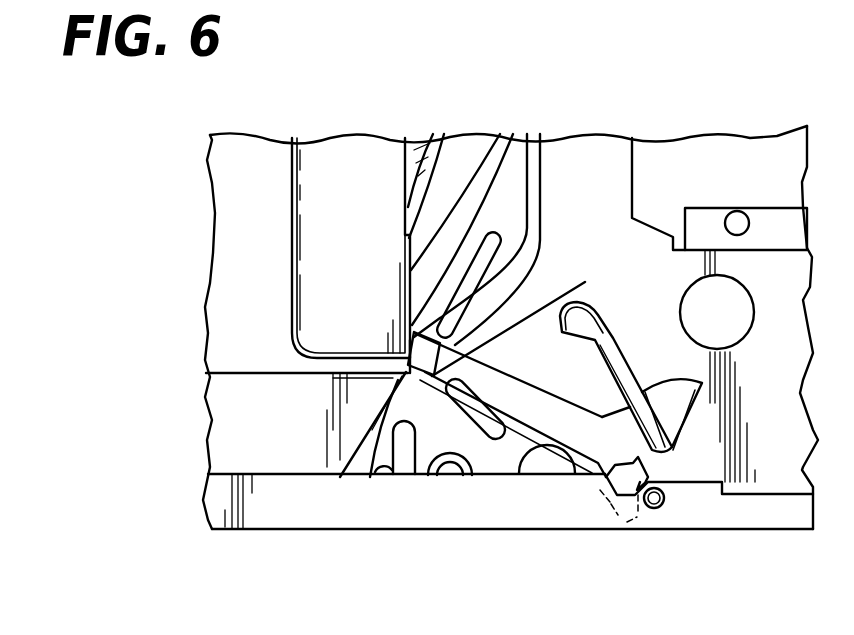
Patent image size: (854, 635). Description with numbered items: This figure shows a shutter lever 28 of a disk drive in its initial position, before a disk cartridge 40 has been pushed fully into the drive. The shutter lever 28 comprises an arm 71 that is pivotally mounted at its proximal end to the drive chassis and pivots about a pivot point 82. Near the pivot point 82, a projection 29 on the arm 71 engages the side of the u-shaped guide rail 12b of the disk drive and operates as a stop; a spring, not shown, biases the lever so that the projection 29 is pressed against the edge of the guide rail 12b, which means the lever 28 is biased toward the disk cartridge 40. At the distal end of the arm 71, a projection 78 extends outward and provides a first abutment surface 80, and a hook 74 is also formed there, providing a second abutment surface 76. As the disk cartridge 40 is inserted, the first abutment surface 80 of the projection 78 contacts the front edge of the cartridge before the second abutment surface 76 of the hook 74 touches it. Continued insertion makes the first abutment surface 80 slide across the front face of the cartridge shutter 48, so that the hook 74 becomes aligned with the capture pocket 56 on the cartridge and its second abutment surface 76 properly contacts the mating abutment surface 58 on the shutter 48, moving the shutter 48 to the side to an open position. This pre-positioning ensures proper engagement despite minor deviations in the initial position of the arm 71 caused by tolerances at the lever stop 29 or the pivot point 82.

The u-shaped guide rail 12b is at (425, 502).
The shutter lever 28 is at (503, 373).
The projection 29 is at (603, 522).
The disk cartridge 40 is at (250, 190).
The cartridge shutter 48 is at (367, 165).
The capture pocket 56 is at (392, 388).
The mating abutment surface 58 is at (395, 372).
The arm 71 is at (553, 427).
The hook 74 is at (631, 356).
The second abutment surface 76 is at (340, 477).
The projection 78 is at (432, 336).
The first abutment surface 80 is at (409, 348).
The pivot point 82 is at (665, 500).